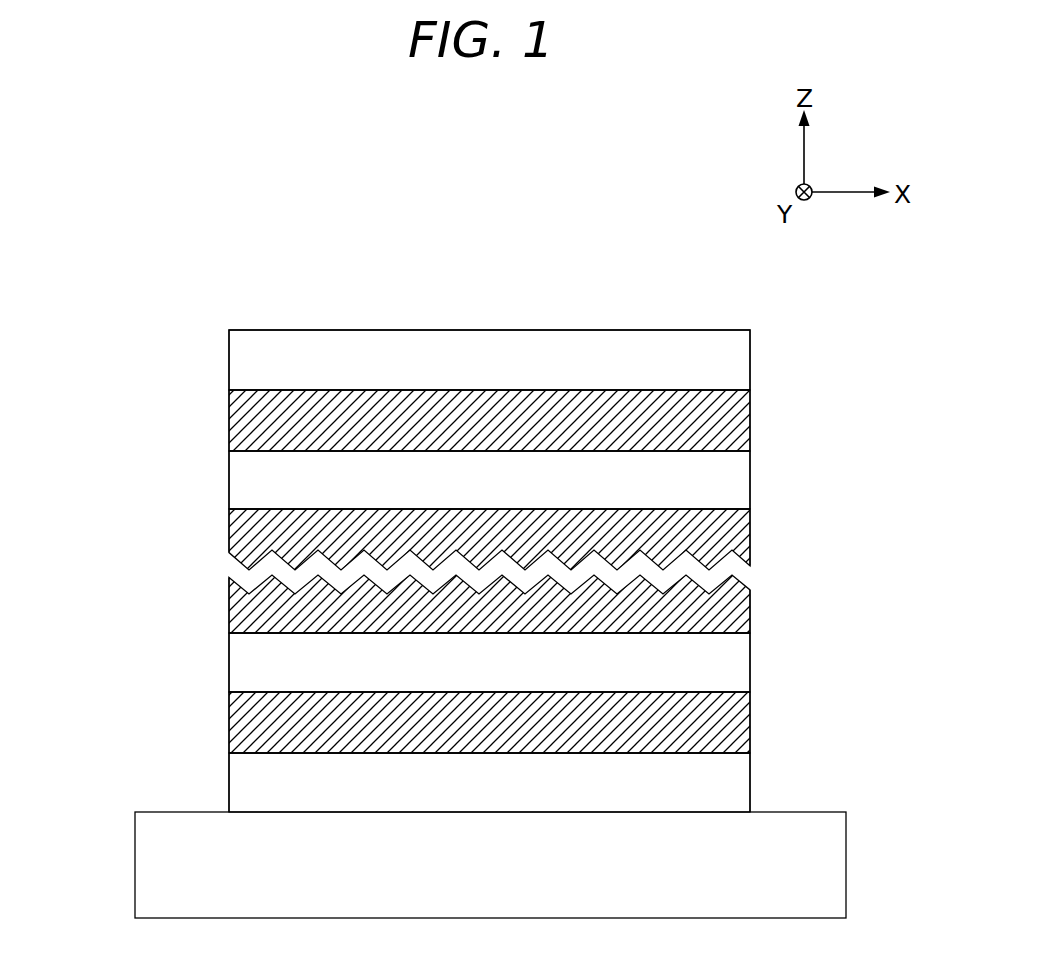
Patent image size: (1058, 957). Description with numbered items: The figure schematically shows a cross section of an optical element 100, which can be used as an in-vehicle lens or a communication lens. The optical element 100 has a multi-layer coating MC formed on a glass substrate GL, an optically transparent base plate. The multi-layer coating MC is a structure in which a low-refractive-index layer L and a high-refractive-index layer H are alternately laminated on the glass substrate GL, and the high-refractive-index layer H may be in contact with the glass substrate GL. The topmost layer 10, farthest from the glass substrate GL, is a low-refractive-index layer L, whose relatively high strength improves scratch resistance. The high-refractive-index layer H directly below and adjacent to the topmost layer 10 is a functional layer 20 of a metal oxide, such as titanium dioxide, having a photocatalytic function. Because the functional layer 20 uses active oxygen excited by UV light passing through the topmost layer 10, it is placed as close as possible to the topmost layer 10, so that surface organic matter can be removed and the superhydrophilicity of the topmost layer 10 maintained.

The optical element 100 is at (635, 242).
The topmost layer 10 is at (740, 348).
The functional layer 20 is at (738, 408).
The low-refractive-index layer L is at (740, 369).
The high-refractive-index layer H is at (735, 437).
The glass substrate GL is at (825, 873).
The multi-layer coating MC is at (126, 333).